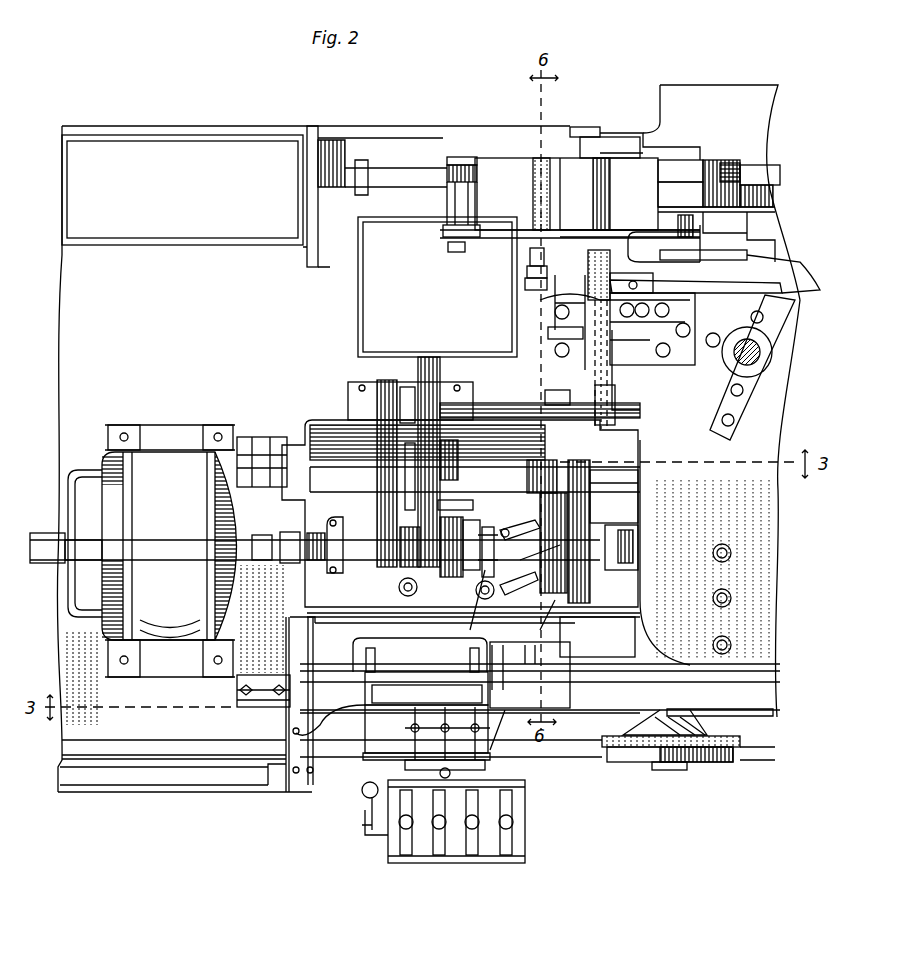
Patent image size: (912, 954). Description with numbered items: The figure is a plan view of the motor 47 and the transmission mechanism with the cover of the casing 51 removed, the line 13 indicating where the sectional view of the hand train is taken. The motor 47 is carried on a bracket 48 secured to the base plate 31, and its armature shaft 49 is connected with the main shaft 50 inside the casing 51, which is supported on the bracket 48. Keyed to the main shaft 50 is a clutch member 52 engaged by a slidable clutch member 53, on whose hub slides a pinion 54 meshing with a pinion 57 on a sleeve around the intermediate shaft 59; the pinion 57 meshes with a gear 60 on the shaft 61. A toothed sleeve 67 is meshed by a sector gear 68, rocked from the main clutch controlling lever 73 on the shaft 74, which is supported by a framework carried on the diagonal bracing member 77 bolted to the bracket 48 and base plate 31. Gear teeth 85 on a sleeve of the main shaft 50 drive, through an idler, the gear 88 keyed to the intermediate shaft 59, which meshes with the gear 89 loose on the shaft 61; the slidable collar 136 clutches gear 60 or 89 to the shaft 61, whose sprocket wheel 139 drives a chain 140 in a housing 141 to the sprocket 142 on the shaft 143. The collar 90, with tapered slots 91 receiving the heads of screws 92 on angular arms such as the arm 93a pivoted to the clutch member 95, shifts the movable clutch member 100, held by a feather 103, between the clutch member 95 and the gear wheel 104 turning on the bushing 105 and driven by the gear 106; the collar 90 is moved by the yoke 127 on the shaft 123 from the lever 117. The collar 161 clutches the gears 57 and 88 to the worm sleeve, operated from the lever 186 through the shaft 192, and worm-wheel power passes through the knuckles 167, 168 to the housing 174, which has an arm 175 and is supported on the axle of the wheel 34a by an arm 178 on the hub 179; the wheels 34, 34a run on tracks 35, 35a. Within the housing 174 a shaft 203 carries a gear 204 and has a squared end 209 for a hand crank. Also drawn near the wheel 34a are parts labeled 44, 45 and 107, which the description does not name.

The section line 13— 13 is at (425, 240).
The base plate 31 is at (755, 520).
The wheel 34 is at (720, 765).
The supporting wheel 34a is at (712, 160).
The track 35 is at (765, 748).
The track 35a is at (770, 175).
The collar 44 is at (732, 166).
The gear 45 is at (770, 195).
The motor 47 is at (172, 630).
The bracket 48 is at (75, 668).
The armature shaft 49 is at (285, 535).
The main shaft 50 is at (473, 554).
The casing 51 is at (600, 620).
The clutch member 52 is at (470, 625).
The slidable clutch member 53 is at (420, 625).
The pinion 54 is at (447, 577).
The pinion 57 is at (475, 458).
The intermediate shaft 59 is at (592, 480).
The gear 60 is at (440, 365).
The shaft 61 is at (485, 403).
The sleeve 67 is at (455, 504).
The sector gear 68 is at (399, 590).
The main clutch controlling lever 73 is at (362, 794).
The shaft 74 is at (365, 830).
The diagonal bracing member 77 is at (596, 698).
The gear teeth 85 is at (400, 560).
The gear 88 is at (377, 510).
The gear 89 is at (352, 384).
The collar 90 is at (495, 519).
The tapered slot 91 is at (525, 522).
The screw 92 is at (495, 590).
The angular arm 93a is at (520, 565).
The clutch member 95 is at (546, 622).
The movable clutch member 100 is at (545, 600).
The feather 103 is at (541, 466).
The gear wheel 104 is at (567, 575).
The bushing 105 is at (630, 533).
The gear 106 is at (605, 490).
The gear 107 is at (632, 552).
The lever 117 is at (470, 840).
The shaft 123 is at (530, 675).
The yoke 127 is at (484, 607).
The slidable collar 136 is at (410, 365).
The sprocket wheel 139 is at (612, 418).
The chain 140 is at (600, 380).
The housing 141 is at (598, 150).
The sprocket 142 is at (592, 298).
The shaft 143 is at (815, 280).
The collar 161 is at (377, 455).
The knuckle 167 is at (525, 283).
The knuckle 168 is at (528, 255).
The housing 174 is at (495, 170).
The arm 175 is at (638, 230).
The arm 178 is at (660, 125).
The hub 179 is at (670, 147).
The lever 186 is at (398, 825).
The shaft 192 is at (445, 636).
The shaft 203 is at (455, 205).
The gear 204 is at (455, 160).
The squared end 209 is at (455, 252).